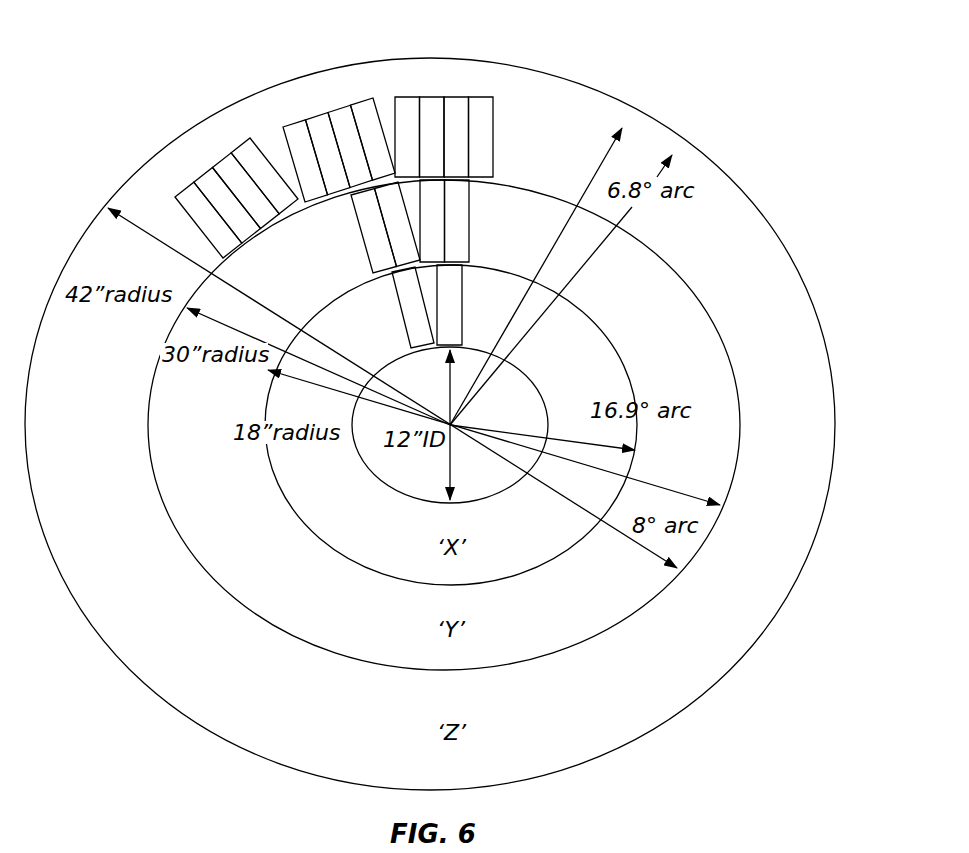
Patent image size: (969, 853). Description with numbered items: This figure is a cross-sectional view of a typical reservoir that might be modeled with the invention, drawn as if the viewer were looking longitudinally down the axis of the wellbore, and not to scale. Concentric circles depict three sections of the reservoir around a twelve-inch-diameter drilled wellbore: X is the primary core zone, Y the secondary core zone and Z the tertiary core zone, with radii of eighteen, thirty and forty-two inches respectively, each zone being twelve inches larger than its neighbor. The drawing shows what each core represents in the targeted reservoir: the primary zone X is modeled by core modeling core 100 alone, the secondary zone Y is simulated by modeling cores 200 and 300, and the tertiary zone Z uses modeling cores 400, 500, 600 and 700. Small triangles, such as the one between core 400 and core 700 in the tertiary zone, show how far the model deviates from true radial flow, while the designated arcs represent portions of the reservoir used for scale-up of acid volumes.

The core modeling core 100 is at (403, 318).
The modeling core 200 is at (444, 215).
The modeling core 300 is at (469, 227).
The modeling core 400 is at (190, 183).
The modeling core 500 is at (203, 175).
The modeling core 600 is at (222, 160).
The modeling core 700 is at (245, 142).